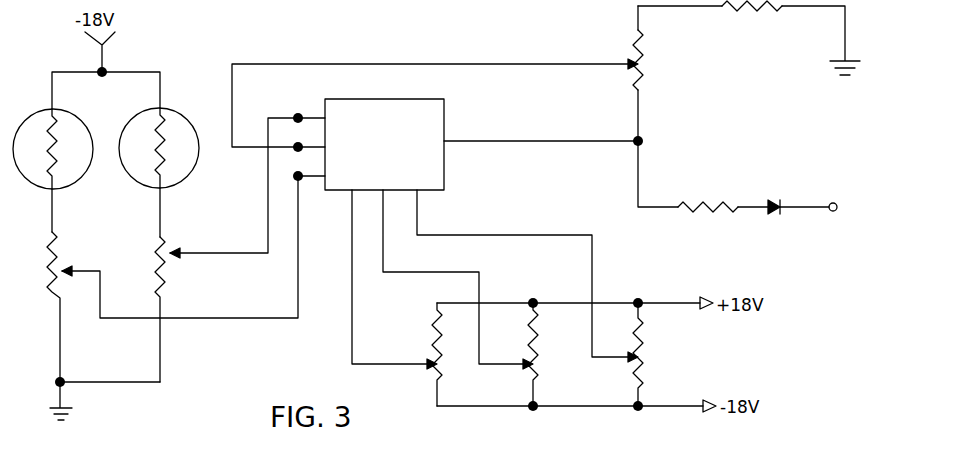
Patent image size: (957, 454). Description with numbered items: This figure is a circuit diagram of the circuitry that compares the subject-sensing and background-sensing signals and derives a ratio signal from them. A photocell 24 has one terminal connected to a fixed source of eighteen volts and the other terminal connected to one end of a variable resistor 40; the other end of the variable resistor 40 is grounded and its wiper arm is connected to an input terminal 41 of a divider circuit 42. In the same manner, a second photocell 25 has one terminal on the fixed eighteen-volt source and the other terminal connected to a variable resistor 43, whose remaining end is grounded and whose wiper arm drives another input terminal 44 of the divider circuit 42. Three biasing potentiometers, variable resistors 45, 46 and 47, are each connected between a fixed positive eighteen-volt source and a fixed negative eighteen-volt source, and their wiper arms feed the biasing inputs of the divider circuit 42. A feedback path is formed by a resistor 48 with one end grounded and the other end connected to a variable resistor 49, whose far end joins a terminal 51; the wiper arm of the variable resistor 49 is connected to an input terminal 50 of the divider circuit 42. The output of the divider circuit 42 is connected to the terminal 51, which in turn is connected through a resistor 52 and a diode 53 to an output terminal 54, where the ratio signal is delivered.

The photocell 24 is at (60, 116).
The photocell 25 is at (167, 118).
The variable resistor 40 is at (57, 246).
The input terminal 41 is at (298, 176).
The divider circuit 42 is at (444, 120).
The variable resistor 43 is at (168, 283).
The input terminal 44 is at (298, 113).
The variable resistor 45 is at (428, 330).
The variable resistor 46 is at (538, 336).
The variable resistor 47 is at (645, 355).
The resistor 48 is at (780, 10).
The variable resistor 49 is at (645, 82).
The input terminal 50 is at (298, 147).
The terminal 51 is at (645, 140).
The resistor 52 is at (688, 201).
The diode 53 is at (770, 213).
The terminal 54 is at (838, 211).